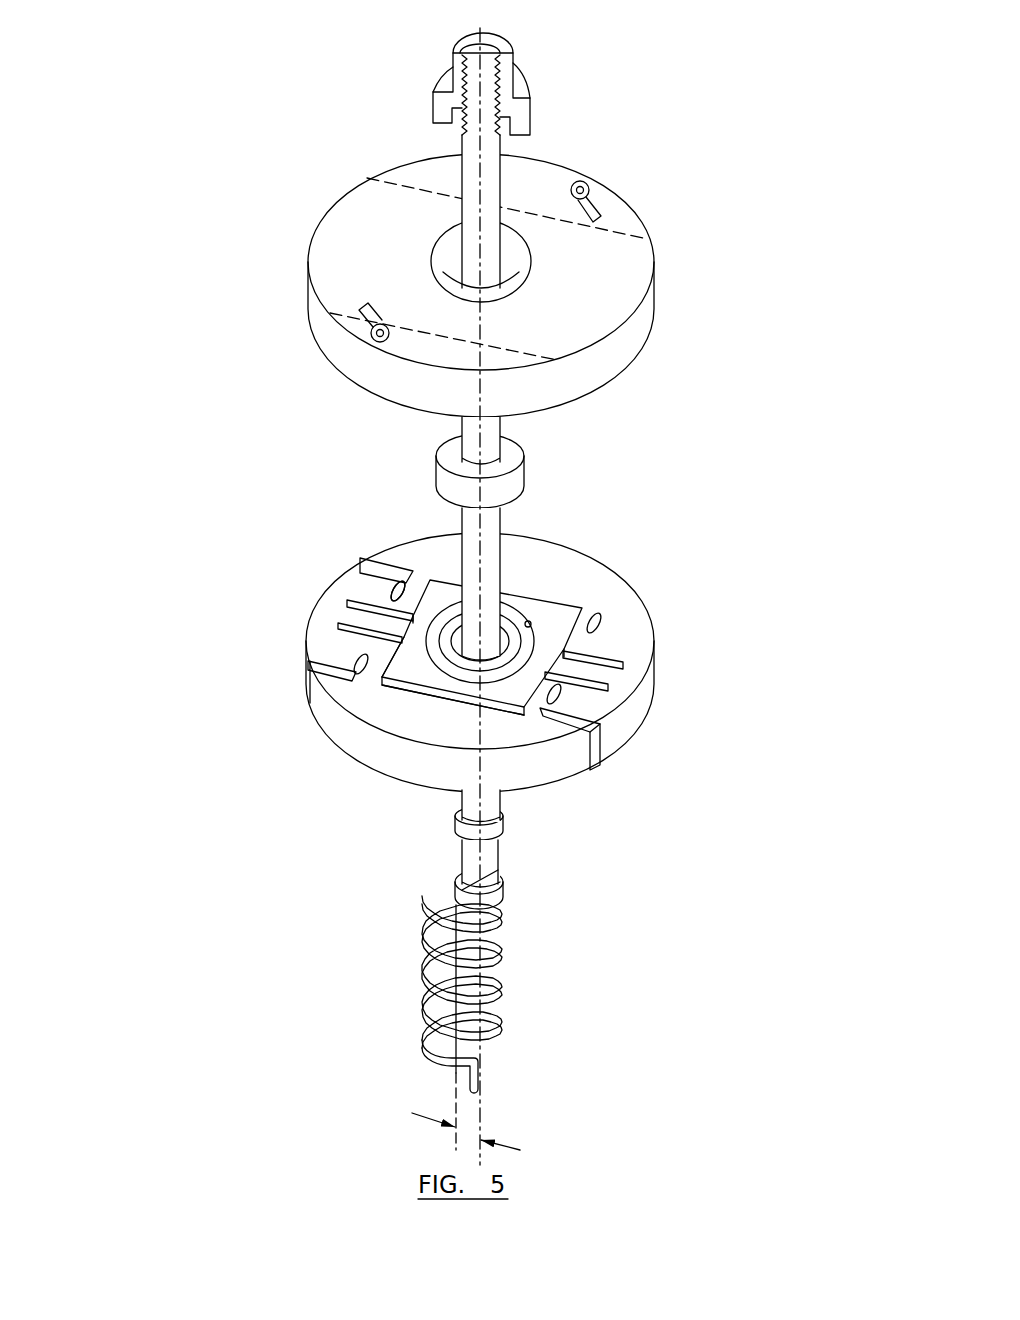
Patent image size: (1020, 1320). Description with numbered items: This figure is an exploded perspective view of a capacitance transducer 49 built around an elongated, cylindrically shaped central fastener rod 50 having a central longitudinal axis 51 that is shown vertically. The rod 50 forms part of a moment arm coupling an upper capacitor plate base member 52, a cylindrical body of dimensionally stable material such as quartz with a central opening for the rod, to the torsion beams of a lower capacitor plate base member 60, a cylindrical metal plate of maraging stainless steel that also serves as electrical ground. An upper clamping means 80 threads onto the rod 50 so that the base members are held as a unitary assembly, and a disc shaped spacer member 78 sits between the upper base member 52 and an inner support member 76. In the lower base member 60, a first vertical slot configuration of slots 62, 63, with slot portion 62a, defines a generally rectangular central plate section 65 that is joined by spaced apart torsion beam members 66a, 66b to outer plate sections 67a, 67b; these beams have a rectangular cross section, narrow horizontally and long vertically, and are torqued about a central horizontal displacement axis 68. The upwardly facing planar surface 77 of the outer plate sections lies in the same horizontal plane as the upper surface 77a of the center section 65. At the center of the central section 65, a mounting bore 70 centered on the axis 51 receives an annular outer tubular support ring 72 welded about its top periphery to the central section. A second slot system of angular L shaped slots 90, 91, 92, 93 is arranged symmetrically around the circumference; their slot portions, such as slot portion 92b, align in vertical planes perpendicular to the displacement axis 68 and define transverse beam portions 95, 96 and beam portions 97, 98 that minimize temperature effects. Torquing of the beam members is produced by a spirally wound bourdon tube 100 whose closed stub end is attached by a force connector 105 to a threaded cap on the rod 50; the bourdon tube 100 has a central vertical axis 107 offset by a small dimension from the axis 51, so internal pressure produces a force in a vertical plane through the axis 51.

The capacitance transducer 49 is at (723, 482).
The central fastener rod 50 is at (500, 190).
The central longitudinal axis 51 is at (482, 136).
The upper capacitor plate base member 52 is at (622, 262).
The lower capacitor plate base member 60 is at (635, 717).
The slot 62 is at (528, 621).
The slot portion 62a is at (512, 592).
The slot 63 is at (457, 703).
The central plate section 65 is at (583, 607).
The torsion beam member 66a is at (588, 669).
The torsion beam member 66b is at (356, 576).
The outer plate section 67a is at (630, 677).
The outer plate section 67b is at (333, 612).
The displacement axis 68 is at (290, 600).
The mounting bore 70 is at (562, 613).
The outer tubular support ring 72 is at (557, 698).
The inner support member 76 is at (543, 597).
The upwardly facing planar surface 77 is at (418, 723).
The upper surface of center section 77a is at (408, 659).
The disc shaped spacer member 78 is at (525, 470).
The upper clamping means 80 is at (432, 94).
The L shaped slot 90 is at (546, 714).
The L shaped slot 91 is at (645, 628).
The L shaped slot 92 is at (408, 577).
The slot portion 92b is at (386, 616).
The L shaped slot 93 is at (352, 676).
The transverse beam portion 95 is at (533, 707).
The transverse beam portion 96 is at (600, 615).
The beam portion 97 is at (418, 585).
The beam portion 98 is at (368, 670).
The spirally wound bourdon tube 100 is at (500, 1001).
The force connector 105 is at (457, 857).
The central vertical axis of bourdon tube 107 is at (454, 1094).